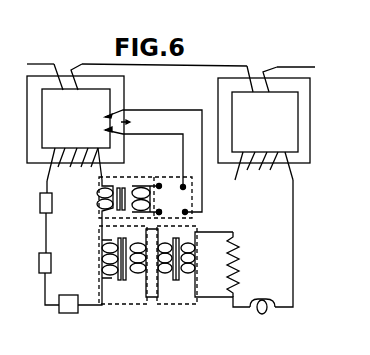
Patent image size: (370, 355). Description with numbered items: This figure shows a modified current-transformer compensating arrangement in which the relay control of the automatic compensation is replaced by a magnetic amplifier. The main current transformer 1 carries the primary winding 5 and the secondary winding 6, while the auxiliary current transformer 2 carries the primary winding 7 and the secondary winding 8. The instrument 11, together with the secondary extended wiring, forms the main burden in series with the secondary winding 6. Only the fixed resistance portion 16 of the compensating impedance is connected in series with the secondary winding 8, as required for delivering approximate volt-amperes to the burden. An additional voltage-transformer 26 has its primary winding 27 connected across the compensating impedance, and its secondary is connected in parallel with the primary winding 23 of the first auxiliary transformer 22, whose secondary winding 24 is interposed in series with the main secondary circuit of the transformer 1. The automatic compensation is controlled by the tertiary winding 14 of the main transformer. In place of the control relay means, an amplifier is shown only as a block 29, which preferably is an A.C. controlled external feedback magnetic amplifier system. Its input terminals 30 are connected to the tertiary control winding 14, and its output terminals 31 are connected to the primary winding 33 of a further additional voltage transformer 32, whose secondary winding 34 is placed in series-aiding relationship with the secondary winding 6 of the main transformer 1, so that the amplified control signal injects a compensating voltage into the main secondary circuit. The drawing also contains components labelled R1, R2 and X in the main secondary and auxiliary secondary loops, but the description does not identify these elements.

The main current transformer 1 is at (143, 87).
The auxiliary current transformer 2 is at (200, 90).
The primary winding 5 is at (68, 86).
The secondary winding 6 is at (74, 156).
The primary winding 7 is at (262, 90).
The secondary winding 8 is at (264, 158).
The instrument 11 is at (68, 297).
The tertiary winding 14 is at (104, 130).
The fixed resistance portion 16 is at (236, 281).
The first auxiliary transformer 22 is at (117, 277).
The primary winding 23 is at (132, 280).
The secondary winding 24 is at (101, 258).
The additional voltage-transformer 26 is at (177, 265).
The primary winding 27 is at (191, 265).
The amplifier means 29 is at (163, 190).
The input terminals 30 is at (182, 200).
The output terminals 31 is at (164, 205).
The additional voltage transformer 32 is at (134, 194).
The primary winding 33 is at (144, 186).
The secondary winding 34 is at (101, 198).
The resistor R1 is at (35, 203).
The resistor R2 is at (34, 264).
The indicating lamp X is at (262, 297).